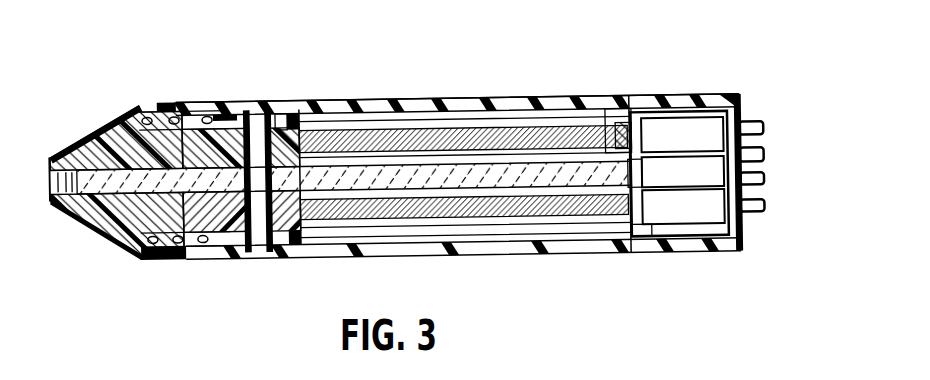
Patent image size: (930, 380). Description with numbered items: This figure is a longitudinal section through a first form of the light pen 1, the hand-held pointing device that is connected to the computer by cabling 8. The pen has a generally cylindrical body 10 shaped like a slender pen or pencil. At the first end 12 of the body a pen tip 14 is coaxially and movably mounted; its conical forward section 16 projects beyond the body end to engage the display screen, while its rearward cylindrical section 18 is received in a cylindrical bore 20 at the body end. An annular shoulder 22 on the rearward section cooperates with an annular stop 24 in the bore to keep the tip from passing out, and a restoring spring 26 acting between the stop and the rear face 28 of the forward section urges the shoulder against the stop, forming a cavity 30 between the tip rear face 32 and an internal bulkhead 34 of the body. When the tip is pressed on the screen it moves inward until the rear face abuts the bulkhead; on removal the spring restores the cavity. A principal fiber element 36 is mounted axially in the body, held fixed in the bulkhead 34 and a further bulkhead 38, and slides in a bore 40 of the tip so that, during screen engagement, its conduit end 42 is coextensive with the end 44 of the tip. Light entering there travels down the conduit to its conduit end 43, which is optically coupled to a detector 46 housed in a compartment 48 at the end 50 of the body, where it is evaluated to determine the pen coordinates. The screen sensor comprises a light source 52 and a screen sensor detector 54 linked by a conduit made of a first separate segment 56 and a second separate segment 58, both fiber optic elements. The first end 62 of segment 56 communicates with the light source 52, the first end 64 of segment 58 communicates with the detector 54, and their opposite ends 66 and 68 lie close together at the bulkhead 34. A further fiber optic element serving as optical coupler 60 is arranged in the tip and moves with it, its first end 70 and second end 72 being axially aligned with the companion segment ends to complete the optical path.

The light pen 1 is at (485, 82).
The cabling 8 is at (757, 120).
The body 10 is at (400, 98).
The first end 12 is at (157, 107).
The pen tip 14 is at (114, 128).
The conical forward section 16 is at (120, 133).
The rearward cylindrical section 18 is at (155, 243).
The cylindrical bore 20 is at (157, 123).
The annular shoulder 22 is at (224, 110).
The annular stop 24 is at (223, 104).
The restoring spring 26 is at (165, 260).
The rear face 28 is at (150, 260).
The cavity 30 is at (241, 117).
The tip rear face 32 is at (250, 243).
The internal bulkhead 34 is at (295, 110).
The principal fiber element 36 is at (354, 178).
The bulkhead 38 is at (620, 118).
The bore 40 is at (47, 197).
The conduit end 42 is at (77, 176).
The conduit end 43 is at (640, 177).
The end of tip 44 is at (50, 160).
The detector 46 is at (727, 225).
The compartment 48 is at (637, 230).
The end of body 50 is at (653, 98).
The light source 52 is at (682, 217).
The screen sensor detector 54 is at (698, 120).
The first separate segment 56 is at (437, 215).
The second separate segment 58 is at (413, 128).
The optical coupler 60 is at (190, 155).
The first end 62 is at (608, 252).
The first end 64 is at (623, 130).
The opposite end 66 is at (233, 250).
The opposite end 68 is at (285, 120).
The first end 70 is at (283, 243).
The second end 72 is at (248, 160).